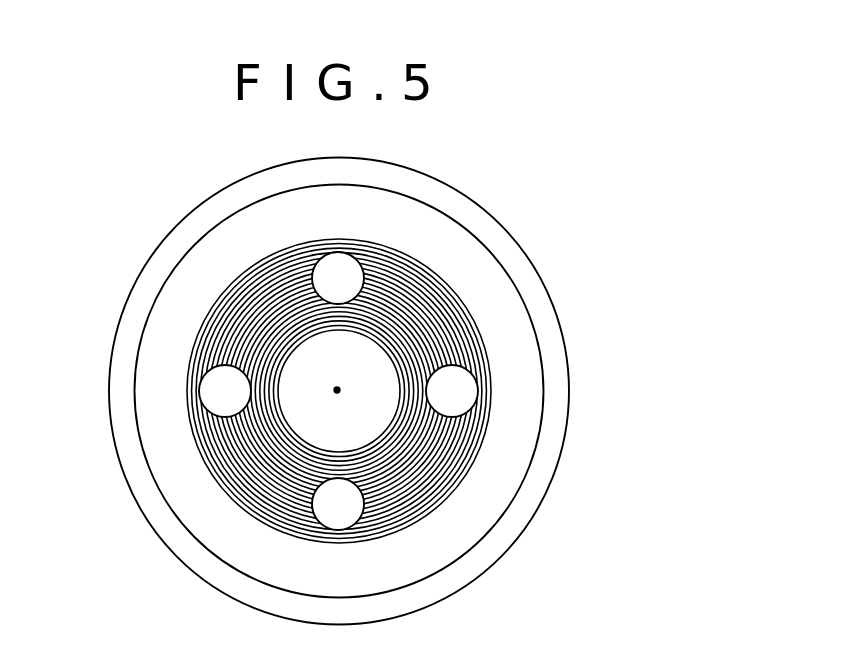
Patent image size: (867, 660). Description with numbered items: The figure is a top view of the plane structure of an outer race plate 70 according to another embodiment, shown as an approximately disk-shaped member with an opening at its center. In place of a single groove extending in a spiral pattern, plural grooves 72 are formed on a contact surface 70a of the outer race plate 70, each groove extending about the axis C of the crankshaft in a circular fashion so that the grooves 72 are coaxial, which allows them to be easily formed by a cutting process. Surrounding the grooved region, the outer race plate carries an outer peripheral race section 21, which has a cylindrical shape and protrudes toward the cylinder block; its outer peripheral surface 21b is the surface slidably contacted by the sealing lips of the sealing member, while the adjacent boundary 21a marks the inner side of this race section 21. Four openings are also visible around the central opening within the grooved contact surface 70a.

The outer race plate 70 is at (582, 164).
The contact surface 70a is at (383, 518).
The grooves 72 is at (339, 391).
The outer race section 21 is at (558, 350).
The inner flange 21a is at (510, 283).
The outer peripheral surface 21b is at (531, 255).
The axis C is at (340, 393).